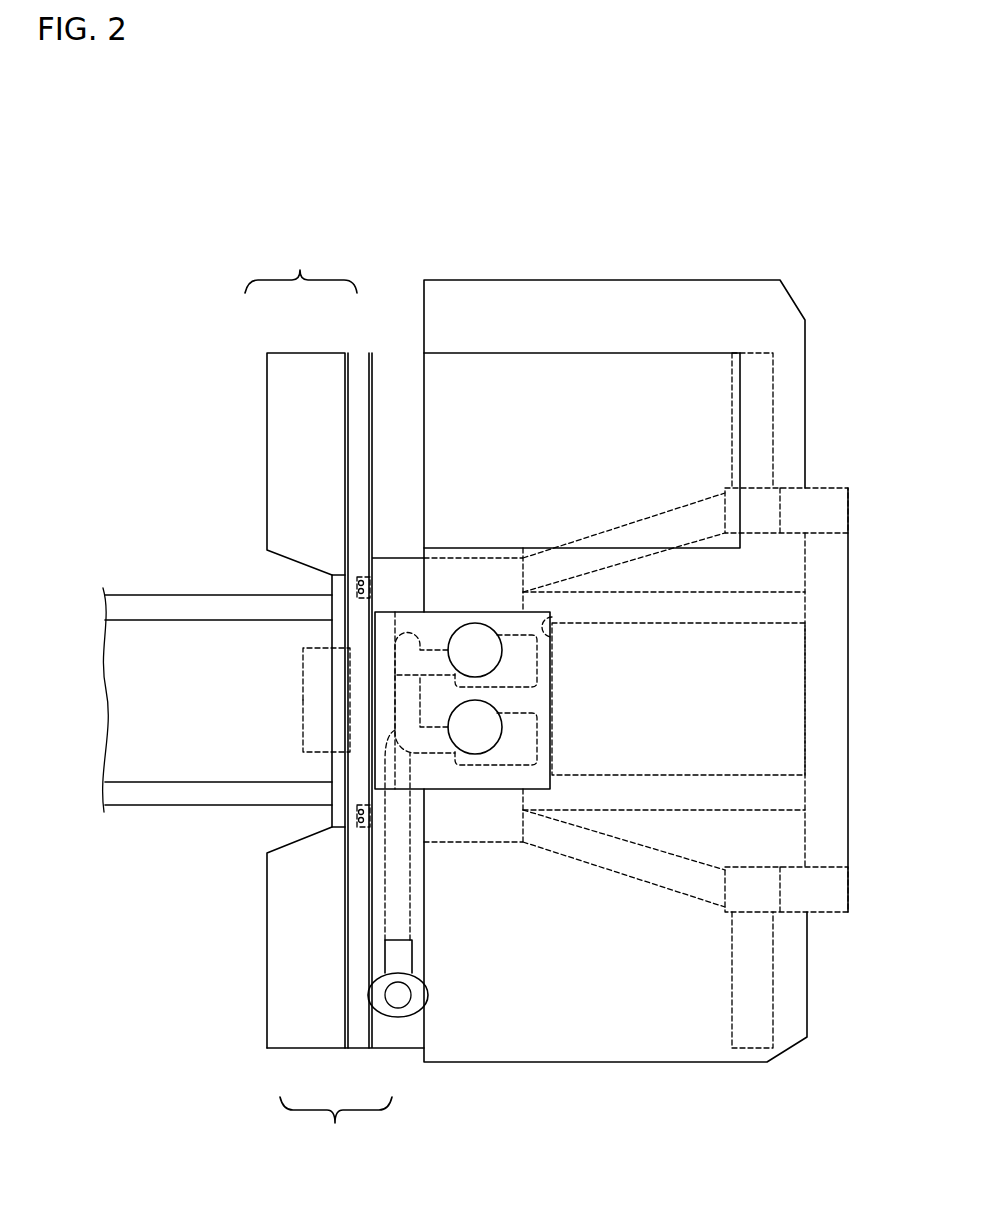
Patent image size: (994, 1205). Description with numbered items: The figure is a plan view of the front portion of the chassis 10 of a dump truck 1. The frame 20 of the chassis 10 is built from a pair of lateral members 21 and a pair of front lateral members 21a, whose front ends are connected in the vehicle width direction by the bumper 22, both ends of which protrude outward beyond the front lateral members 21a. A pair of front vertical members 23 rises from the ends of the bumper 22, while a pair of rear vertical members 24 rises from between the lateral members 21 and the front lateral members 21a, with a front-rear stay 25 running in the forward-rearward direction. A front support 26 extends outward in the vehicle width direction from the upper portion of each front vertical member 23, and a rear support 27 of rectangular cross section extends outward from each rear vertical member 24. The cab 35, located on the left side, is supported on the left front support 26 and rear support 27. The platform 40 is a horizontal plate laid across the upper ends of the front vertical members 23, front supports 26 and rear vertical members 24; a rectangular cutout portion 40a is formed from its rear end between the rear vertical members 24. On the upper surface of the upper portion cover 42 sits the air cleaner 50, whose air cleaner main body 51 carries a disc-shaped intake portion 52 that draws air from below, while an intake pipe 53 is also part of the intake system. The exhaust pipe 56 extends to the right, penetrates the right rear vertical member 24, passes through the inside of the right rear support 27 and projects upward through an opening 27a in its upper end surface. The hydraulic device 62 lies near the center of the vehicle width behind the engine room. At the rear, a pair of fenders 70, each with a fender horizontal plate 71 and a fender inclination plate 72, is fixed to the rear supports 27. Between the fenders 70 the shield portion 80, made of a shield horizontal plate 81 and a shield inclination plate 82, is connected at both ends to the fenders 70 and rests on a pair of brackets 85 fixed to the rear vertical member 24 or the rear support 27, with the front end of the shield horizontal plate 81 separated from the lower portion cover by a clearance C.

The dump truck 1 is at (150, 180).
The chassis 10 is at (215, 224).
The frame 20 is at (217, 716).
The lateral member 21 is at (160, 605).
The front lateral member 21a is at (772, 603).
The bumper 22 is at (840, 715).
The front vertical member 23 is at (810, 503).
The rear vertical member 24 is at (475, 573).
The front-rear stay 25 is at (674, 525).
The front support 26 is at (763, 399).
The rear support 27 is at (393, 365).
The opening 27a is at (407, 967).
The cab 35 is at (628, 365).
The platform 40 is at (588, 1050).
The cutout portion 40a is at (553, 622).
The upper portion cover 42 is at (550, 698).
The air cleaner 50 is at (586, 698).
The air cleaner main body 51 is at (523, 663).
The intake portion 52 is at (493, 648).
The intake pipe 53 is at (428, 658).
The exhaust pipe 56 is at (398, 950).
The hydraulic device 62 is at (322, 748).
The fender 70 is at (318, 698).
The fender horizontal plate 71 is at (357, 372).
The fender inclination plate 72 is at (285, 372).
The shield portion 80 is at (270, 701).
The shield horizontal plate 81 is at (345, 667).
The shield inclination plate 82 is at (299, 729).
The bracket 85 is at (332, 582).
The clearance C is at (360, 783).